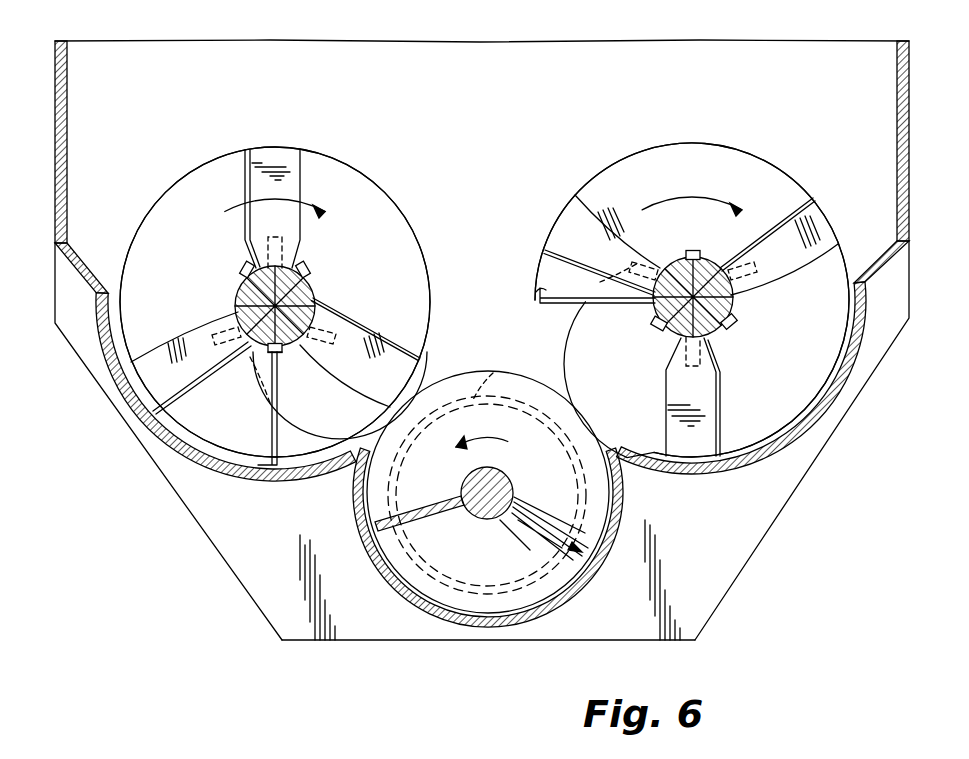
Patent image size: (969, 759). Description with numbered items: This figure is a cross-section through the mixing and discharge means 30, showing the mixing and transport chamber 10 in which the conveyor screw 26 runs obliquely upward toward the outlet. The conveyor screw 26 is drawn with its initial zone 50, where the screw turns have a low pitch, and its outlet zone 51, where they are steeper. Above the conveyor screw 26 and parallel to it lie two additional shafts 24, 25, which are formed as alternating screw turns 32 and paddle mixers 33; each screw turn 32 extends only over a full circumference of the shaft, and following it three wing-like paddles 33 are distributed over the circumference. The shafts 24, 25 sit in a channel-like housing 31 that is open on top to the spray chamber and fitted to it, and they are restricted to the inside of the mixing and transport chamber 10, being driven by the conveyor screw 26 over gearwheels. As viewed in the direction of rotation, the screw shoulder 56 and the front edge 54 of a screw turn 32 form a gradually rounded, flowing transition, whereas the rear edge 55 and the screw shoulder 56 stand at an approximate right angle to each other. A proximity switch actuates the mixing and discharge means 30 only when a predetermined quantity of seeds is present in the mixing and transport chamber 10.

The mixing and transport chamber 10 is at (165, 68).
The mixing and discharge means 30 is at (633, 68).
The channel-like housing 31 is at (432, 625).
The screw turns 32 is at (190, 190).
The paddle mixers 33 is at (298, 165).
The screw shoulder 56 is at (392, 190).
The shaft 24 is at (238, 305).
The shaft 25 is at (745, 310).
The conveyor screw 26 is at (471, 366).
The initial zone 50 is at (521, 395).
The outlet zone 51 is at (563, 402).
The front edge 54 is at (300, 445).
The rear edge 55 is at (282, 398).